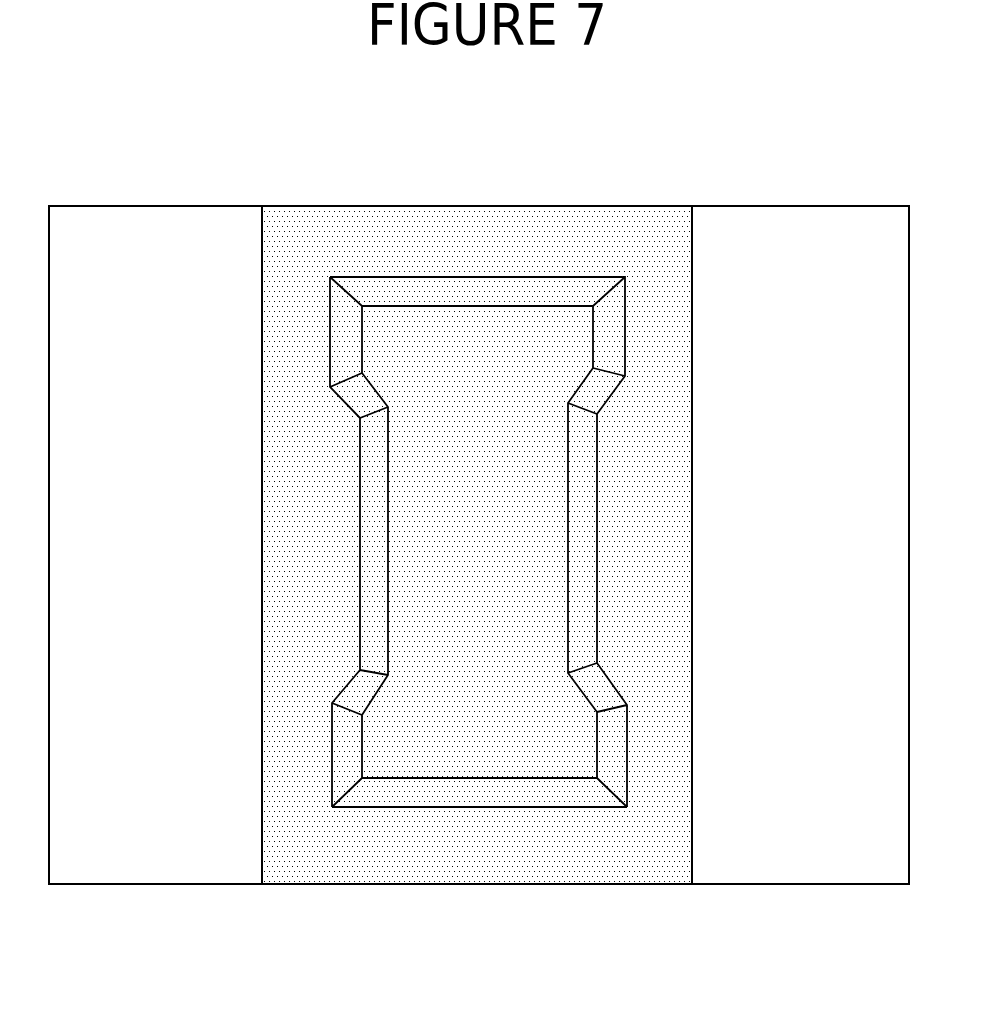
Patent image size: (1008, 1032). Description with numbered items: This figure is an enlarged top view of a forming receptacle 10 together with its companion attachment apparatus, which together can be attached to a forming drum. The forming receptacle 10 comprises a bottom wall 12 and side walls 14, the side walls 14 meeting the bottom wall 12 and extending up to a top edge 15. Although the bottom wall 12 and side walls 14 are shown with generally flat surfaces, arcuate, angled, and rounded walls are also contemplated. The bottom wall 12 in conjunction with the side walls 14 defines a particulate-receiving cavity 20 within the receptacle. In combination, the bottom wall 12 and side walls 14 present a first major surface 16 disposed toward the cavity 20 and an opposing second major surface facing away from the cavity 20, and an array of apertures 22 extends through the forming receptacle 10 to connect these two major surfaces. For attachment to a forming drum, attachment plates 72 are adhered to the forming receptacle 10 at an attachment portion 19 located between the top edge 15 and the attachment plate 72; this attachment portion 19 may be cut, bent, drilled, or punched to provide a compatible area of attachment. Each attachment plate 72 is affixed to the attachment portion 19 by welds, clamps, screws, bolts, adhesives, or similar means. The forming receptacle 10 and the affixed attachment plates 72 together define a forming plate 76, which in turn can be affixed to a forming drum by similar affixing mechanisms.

The forming receptacle 10 is at (498, 196).
The bottom wall 12 is at (488, 748).
The side walls 14 is at (370, 787).
The top edge 15 is at (537, 808).
The first major surface 16 is at (540, 345).
The attachment portion 19 is at (652, 332).
The particulate-receiving cavity 20 is at (423, 328).
The apertures 22 is at (577, 755).
The attachment plate 72 is at (152, 262).
The forming plate 76 is at (204, 145).